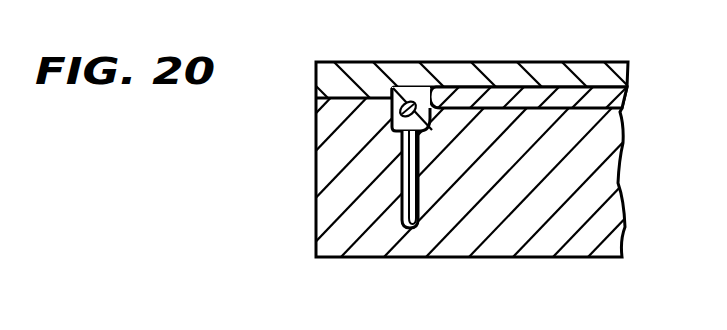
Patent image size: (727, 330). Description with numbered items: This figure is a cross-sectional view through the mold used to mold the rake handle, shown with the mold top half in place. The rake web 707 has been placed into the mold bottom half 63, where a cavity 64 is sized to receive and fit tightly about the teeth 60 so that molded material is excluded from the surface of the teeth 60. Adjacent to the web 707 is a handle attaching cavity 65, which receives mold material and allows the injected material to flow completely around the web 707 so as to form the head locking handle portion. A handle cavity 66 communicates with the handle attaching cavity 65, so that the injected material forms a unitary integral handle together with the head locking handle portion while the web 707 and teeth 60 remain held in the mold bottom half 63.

The mold bottom half 63 is at (331, 153).
The cavity 64 is at (401, 207).
The teeth 60 is at (408, 228).
The handle attaching cavity 65 is at (398, 90).
The handle cavity 66 is at (586, 100).
The rake web 707 is at (415, 103).